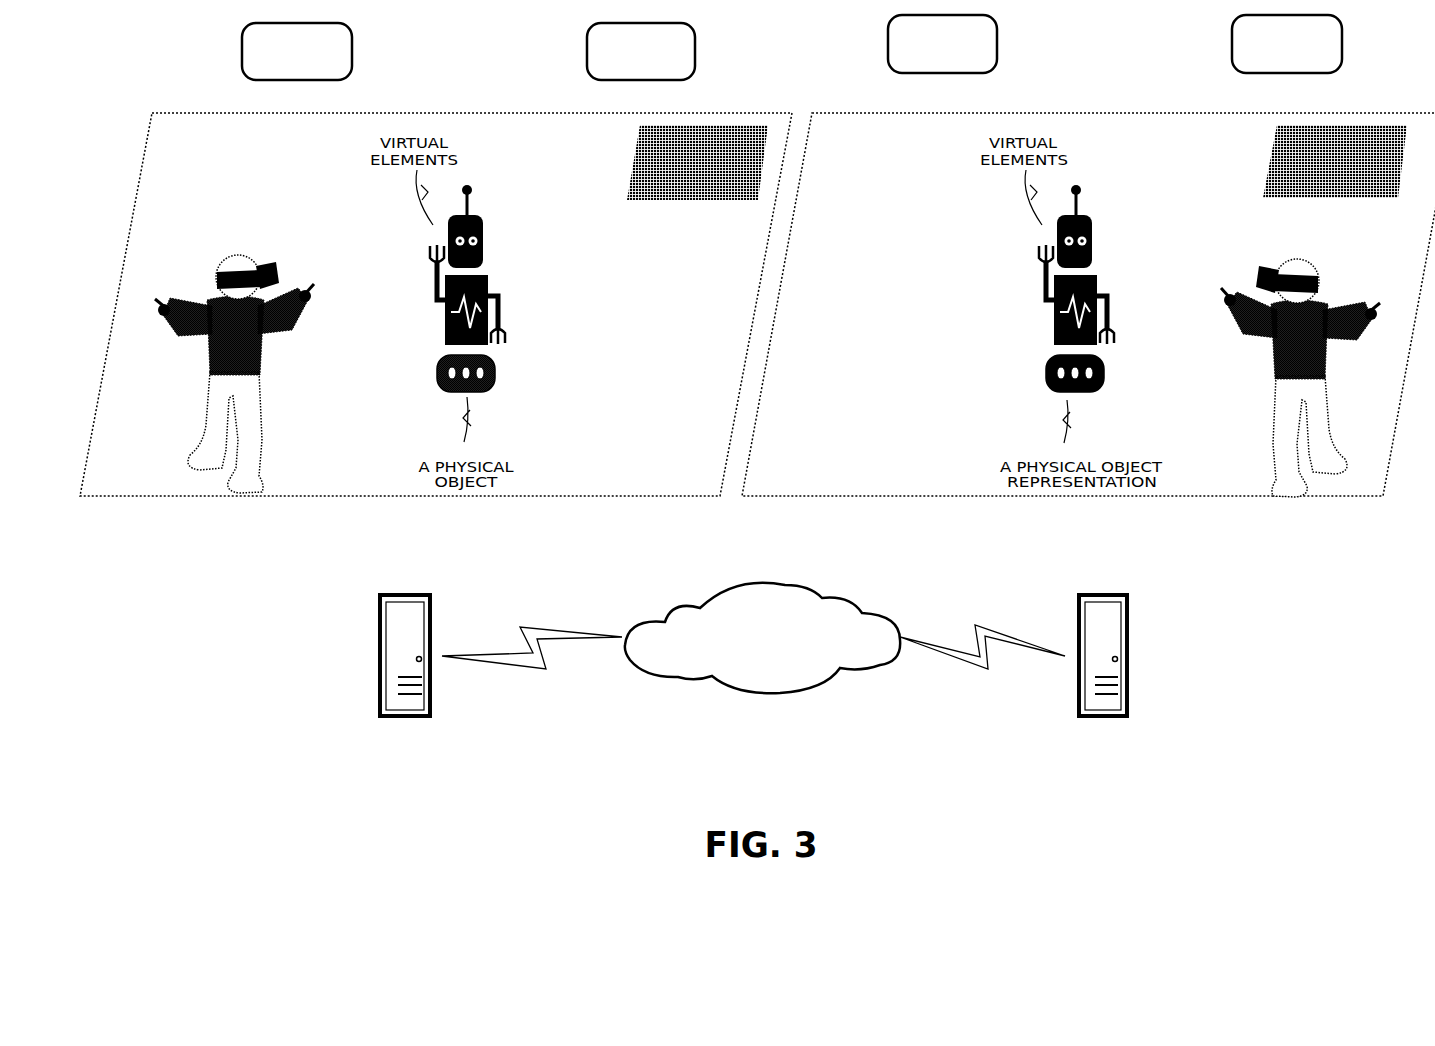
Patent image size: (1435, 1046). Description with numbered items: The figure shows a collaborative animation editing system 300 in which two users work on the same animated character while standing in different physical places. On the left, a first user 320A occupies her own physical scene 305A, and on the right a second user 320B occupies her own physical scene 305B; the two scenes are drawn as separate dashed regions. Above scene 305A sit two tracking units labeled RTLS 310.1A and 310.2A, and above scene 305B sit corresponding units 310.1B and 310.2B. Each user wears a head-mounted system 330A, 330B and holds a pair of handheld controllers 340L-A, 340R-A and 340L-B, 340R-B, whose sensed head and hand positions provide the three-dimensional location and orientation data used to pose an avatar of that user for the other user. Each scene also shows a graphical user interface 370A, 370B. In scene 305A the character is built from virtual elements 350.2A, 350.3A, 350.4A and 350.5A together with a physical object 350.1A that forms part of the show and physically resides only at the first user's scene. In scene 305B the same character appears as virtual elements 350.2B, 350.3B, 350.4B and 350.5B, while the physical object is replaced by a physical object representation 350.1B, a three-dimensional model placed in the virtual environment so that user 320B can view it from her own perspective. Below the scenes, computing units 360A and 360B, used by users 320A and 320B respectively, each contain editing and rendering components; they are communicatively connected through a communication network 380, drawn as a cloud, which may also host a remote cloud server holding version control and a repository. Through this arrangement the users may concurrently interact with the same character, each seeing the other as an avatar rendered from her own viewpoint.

The system 300 is at (742, 883).
The physical scene 305A is at (436, 304).
The physical scene 305B is at (1088, 304).
The real-time location system 310.1A is at (297, 51).
The real-time location system 310.2A is at (641, 51).
The real-time location system 310.1B is at (942, 44).
The real-time location system 310.2B is at (1287, 44).
The user 320A is at (235, 392).
The user 320B is at (1299, 394).
The head-mounted display A 330A is at (266, 267).
The head-mounted display B 330B is at (1306, 276).
The left hand controller A 340L-A is at (164, 296).
The right hand controller A 340R-A is at (340, 301).
The left hand controller B 340L-B is at (1203, 288).
The right hand controller B 340R-B is at (1381, 302).
The physical object 350.1A is at (503, 373).
The virtual element torso 350.2A is at (431, 310).
The virtual element head 350.3A is at (494, 226).
The virtual element left arm 350.4A is at (403, 272).
The virtual element right arm 350.5A is at (528, 320).
The three-dimensional model representation of physical object 350.1B is at (1112, 373).
The virtual element torso 350.2B is at (1041, 310).
The virtual element head 350.3B is at (1101, 226).
The virtual element left arm 350.4B is at (1011, 272).
The virtual element right arm 350.5B is at (1138, 320).
The computing unit 360A is at (405, 681).
The computing unit 360B is at (1102, 681).
The graphical user interface A 370A is at (697, 162).
The graphical user interface B 370B is at (1335, 161).
The communication network 380 is at (762, 638).